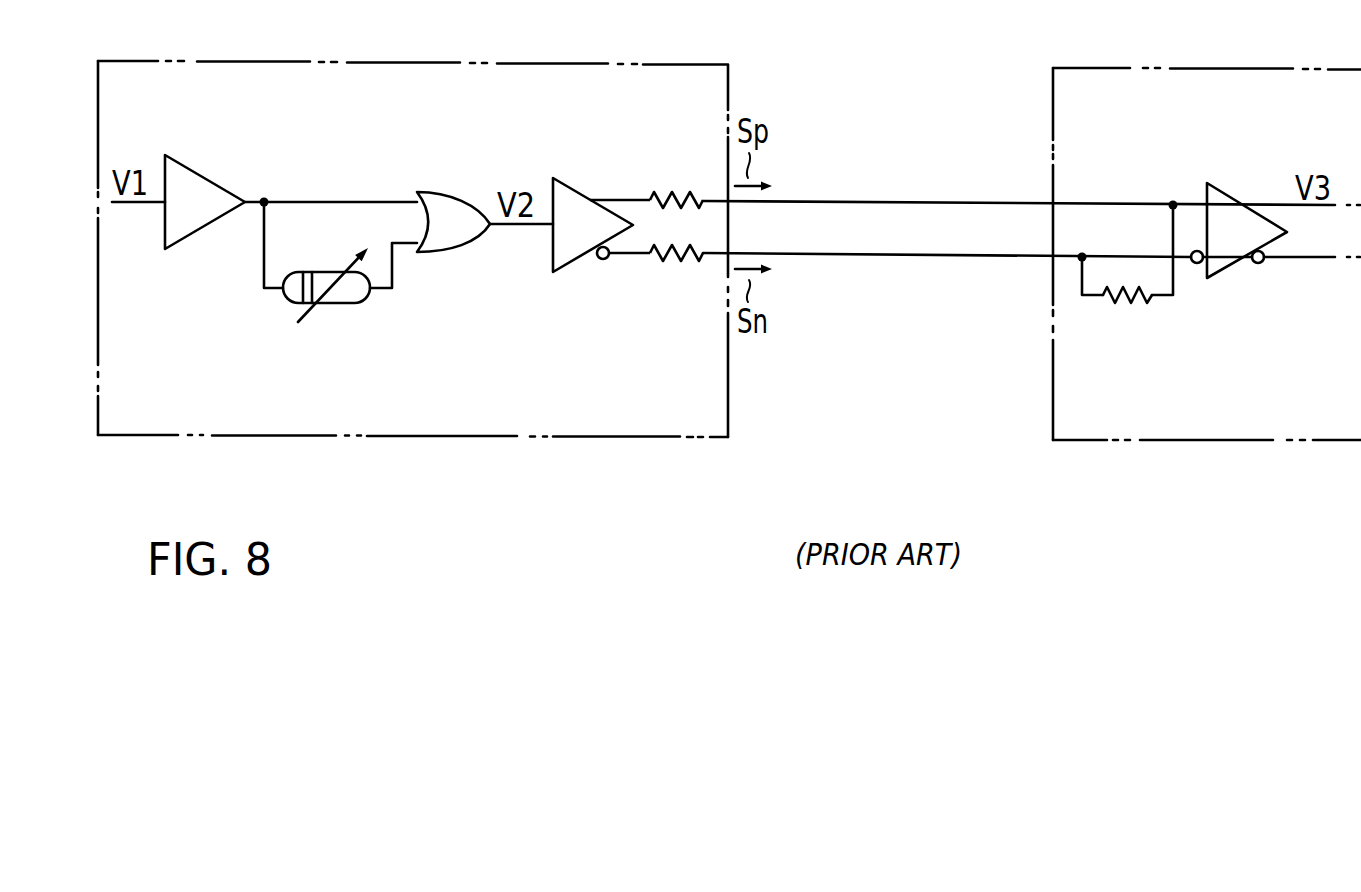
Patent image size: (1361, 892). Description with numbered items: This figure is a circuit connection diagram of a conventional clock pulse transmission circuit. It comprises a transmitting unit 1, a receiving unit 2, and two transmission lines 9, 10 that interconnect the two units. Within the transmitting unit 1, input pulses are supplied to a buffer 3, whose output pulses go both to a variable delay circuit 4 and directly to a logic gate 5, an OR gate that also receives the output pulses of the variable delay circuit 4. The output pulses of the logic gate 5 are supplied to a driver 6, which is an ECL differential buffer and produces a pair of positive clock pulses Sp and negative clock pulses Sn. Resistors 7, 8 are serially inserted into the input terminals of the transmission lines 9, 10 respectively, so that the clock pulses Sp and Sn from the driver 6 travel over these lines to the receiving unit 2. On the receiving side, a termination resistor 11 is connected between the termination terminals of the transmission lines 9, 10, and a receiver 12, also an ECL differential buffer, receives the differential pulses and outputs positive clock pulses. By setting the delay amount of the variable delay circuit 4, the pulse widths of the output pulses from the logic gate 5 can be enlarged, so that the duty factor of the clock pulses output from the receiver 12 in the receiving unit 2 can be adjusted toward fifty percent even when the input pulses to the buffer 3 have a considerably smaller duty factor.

The transmitting unit 1 is at (283, 61).
The receiving unit 2 is at (1094, 68).
The buffer 3 is at (212, 182).
The variable delay circuit 4 is at (337, 305).
The logic gate 5 is at (435, 188).
The driver 6 is at (580, 185).
The resistor 7 is at (657, 213).
The resistor 8 is at (673, 265).
The transmission line 9 is at (947, 202).
The transmission line 10 is at (946, 258).
The termination resistor 11 is at (1126, 304).
The receiver 12 is at (1232, 195).